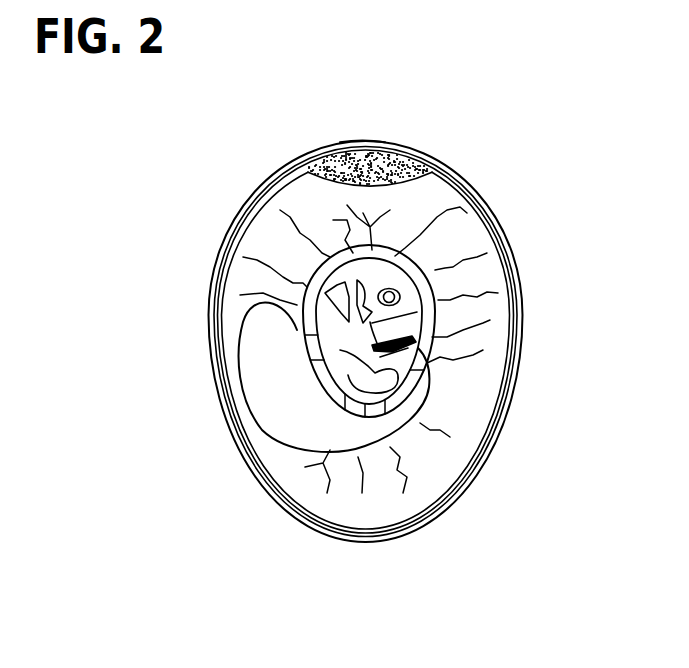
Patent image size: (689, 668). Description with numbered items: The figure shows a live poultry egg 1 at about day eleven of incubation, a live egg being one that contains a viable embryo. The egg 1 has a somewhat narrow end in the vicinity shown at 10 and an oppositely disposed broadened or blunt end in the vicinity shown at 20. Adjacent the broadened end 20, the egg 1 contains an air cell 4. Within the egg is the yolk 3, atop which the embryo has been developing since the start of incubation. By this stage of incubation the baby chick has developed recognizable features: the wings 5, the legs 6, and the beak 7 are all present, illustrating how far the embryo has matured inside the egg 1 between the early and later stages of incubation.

The live poultry egg 1 is at (407, 337).
The yolk 3 is at (463, 240).
The air cell 4 is at (388, 160).
The wings 5 is at (390, 317).
The legs 6 is at (380, 364).
The beak 7 is at (390, 317).
The narrow end 10 is at (372, 542).
The broadened end 20 is at (362, 140).